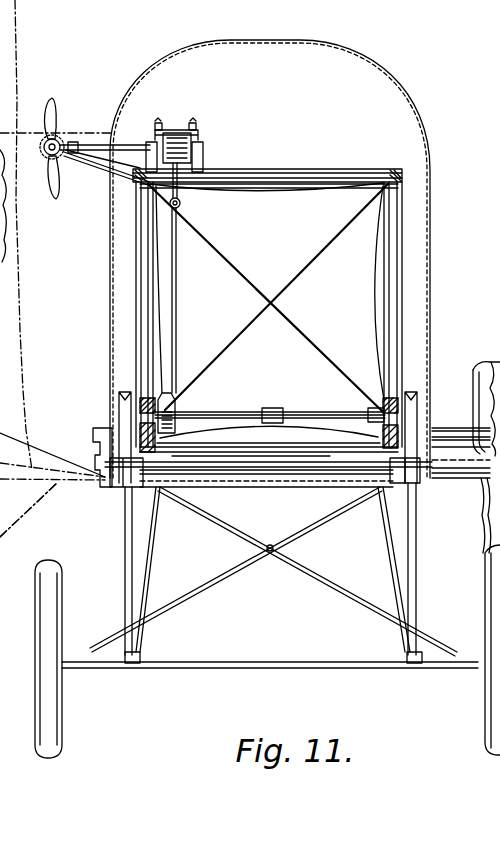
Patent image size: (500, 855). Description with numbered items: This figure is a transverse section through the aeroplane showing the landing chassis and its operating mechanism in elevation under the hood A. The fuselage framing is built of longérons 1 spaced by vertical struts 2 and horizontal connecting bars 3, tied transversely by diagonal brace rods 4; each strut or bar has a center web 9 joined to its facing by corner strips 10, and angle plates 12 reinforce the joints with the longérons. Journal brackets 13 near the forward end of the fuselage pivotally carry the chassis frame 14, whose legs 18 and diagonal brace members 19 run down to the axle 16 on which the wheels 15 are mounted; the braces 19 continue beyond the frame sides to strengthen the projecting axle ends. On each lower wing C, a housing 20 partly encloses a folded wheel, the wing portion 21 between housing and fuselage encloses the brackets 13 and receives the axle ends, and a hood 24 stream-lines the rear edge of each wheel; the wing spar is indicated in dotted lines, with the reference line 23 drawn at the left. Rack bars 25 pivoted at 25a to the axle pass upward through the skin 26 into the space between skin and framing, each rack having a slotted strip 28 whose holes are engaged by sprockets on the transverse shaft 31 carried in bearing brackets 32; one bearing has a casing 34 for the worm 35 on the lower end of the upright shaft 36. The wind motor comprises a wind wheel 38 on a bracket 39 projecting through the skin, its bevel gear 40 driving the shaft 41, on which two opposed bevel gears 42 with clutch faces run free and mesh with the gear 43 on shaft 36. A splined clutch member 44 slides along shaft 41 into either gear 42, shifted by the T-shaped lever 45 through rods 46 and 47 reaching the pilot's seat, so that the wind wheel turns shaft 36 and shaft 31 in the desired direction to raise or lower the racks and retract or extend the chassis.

The hood A is at (396, 82).
The longéron 1 is at (140, 183).
The vertical strut 2 is at (137, 298).
The horizontal connecting bar 3 is at (276, 170).
The diagonal brace rod 4 is at (272, 288).
The center member or rib 9 is at (285, 191).
The corner strip 10 is at (315, 172).
The angle plate 12 is at (403, 205).
The journal bracket 13 is at (120, 488).
The chassis frame 14 is at (270, 554).
The wheel 15 is at (34, 637).
The axle 16 is at (232, 669).
The leg 18 is at (150, 545).
The diagonal brace member 19 is at (190, 584).
The housing 20 is at (481, 398).
The wing portion 21 is at (95, 431).
The reference line 23 is at (28, 510).
The hood 24 is at (481, 527).
The rack bar 25 is at (124, 560).
The pivot 25a is at (135, 664).
The skin 26 is at (432, 265).
The plate or strip 28 is at (120, 393).
The transverse shaft 31 is at (296, 411).
The bearing bracket 32 is at (146, 398).
The casing 34 is at (190, 413).
The worm 35 is at (178, 395).
The upwardly extending shaft 36 is at (177, 292).
The wind wheel 38 is at (50, 106).
The bracket 39 is at (97, 172).
The bevel gear 40 is at (47, 160).
The shaft 41 is at (97, 144).
The bevel gear 42 is at (150, 142).
The bevel gear 43 is at (186, 165).
The clutch member 44 is at (181, 130).
The T-shaped operating lever 45 is at (167, 130).
The rod 46 is at (194, 124).
The rod 47 is at (158, 126).
The lower wing C is at (462, 440).